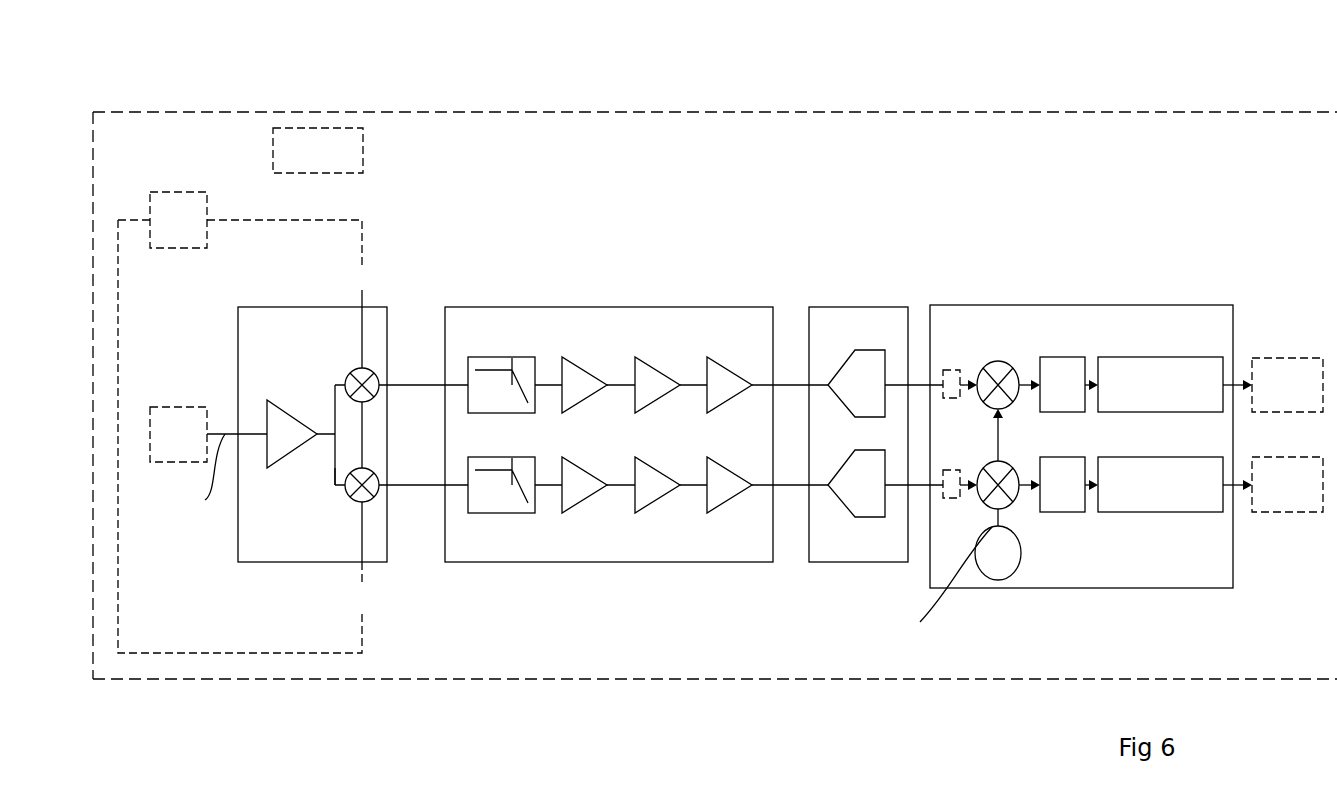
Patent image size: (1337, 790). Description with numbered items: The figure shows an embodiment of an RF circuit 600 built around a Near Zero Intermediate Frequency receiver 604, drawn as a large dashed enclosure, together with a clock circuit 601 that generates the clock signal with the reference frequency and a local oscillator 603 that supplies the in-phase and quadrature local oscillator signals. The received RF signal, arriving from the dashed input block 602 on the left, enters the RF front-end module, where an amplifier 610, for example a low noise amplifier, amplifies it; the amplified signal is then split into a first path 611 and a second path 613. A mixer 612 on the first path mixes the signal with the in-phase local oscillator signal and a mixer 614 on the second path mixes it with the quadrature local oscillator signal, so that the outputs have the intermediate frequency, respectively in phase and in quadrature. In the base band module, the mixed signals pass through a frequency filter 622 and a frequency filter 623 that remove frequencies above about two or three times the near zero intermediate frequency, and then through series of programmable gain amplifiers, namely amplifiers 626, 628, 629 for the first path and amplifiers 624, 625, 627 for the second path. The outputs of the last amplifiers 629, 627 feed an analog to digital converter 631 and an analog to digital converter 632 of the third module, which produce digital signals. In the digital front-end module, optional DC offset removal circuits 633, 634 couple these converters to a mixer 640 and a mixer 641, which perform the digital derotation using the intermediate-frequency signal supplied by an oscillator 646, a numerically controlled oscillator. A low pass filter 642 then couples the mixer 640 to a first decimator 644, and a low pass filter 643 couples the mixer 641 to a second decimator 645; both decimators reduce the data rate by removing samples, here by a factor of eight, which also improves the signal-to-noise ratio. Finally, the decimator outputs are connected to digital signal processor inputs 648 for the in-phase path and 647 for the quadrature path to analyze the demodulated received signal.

The RF circuit 600 is at (378, 62).
The clock circuit 601 is at (363, 150).
The antenna / RF input source 602 is at (168, 462).
The local oscillator 603 is at (180, 192).
The Near Zero Intermediate Frequency (NZIF) receiver 604 is at (305, 112).
The amplifier 610 is at (290, 415).
The first path 611 is at (335, 382).
The mixer 612 is at (378, 378).
The second path 613 is at (335, 472).
The mixer 614 is at (378, 478).
The frequency filter 622 is at (495, 357).
The frequency filter 623 is at (493, 513).
The amplifier 624 is at (585, 499).
The amplifier 625 is at (657, 499).
The amplifier 626 is at (582, 368).
The amplifier 627 is at (730, 499).
The amplifier 628 is at (657, 370).
The amplifier 629 is at (727, 369).
The analog to digital converter 631 is at (870, 350).
The analog to digital converter 632 is at (868, 517).
The DC offset removal circuit 633 is at (950, 370).
The DC offset removal circuit 634 is at (950, 498).
The mixer 640 is at (990, 362).
The mixer 641 is at (1012, 502).
The low pass filter 642 is at (1068, 357).
The low pass filter 643 is at (1068, 512).
The first decimator 644 is at (1148, 357).
The second decimator 645 is at (1150, 512).
The oscillator 646 is at (990, 579).
The digital signal processor input (Q path) 647 is at (1295, 512).
The digital signal processor input (I path) 648 is at (1290, 358).